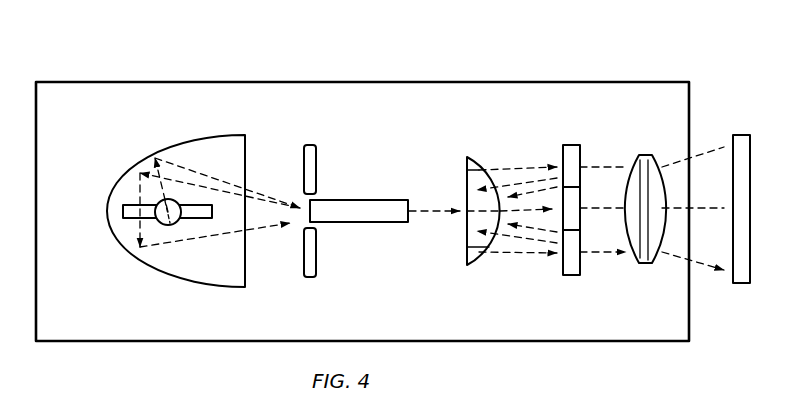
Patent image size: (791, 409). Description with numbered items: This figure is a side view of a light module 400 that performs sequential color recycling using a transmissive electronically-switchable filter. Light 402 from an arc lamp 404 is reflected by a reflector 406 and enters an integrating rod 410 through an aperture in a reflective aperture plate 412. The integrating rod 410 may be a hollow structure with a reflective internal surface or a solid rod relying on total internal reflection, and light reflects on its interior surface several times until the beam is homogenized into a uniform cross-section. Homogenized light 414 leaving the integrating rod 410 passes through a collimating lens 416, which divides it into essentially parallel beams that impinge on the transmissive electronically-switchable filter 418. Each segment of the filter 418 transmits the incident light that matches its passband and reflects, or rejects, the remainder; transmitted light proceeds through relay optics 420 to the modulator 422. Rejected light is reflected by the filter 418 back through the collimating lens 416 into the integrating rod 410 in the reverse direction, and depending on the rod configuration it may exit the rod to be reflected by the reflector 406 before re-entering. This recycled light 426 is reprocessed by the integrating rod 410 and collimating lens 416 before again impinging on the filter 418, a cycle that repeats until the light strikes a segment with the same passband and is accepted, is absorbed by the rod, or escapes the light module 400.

The light module 400 is at (362, 81).
The light 402 is at (175, 158).
The arc lamp 404 is at (113, 203).
The reflector 406 is at (172, 277).
The integrating rod 410 is at (363, 199).
The reflective aperture plate 412 is at (308, 143).
The homogenized light 414 is at (423, 213).
The collimating lens 416 is at (473, 157).
The transmissive electronically-switchable filter 418 is at (575, 145).
The relay optics 420 is at (643, 153).
The modulator 422 is at (743, 135).
The recycled light 426 is at (248, 228).